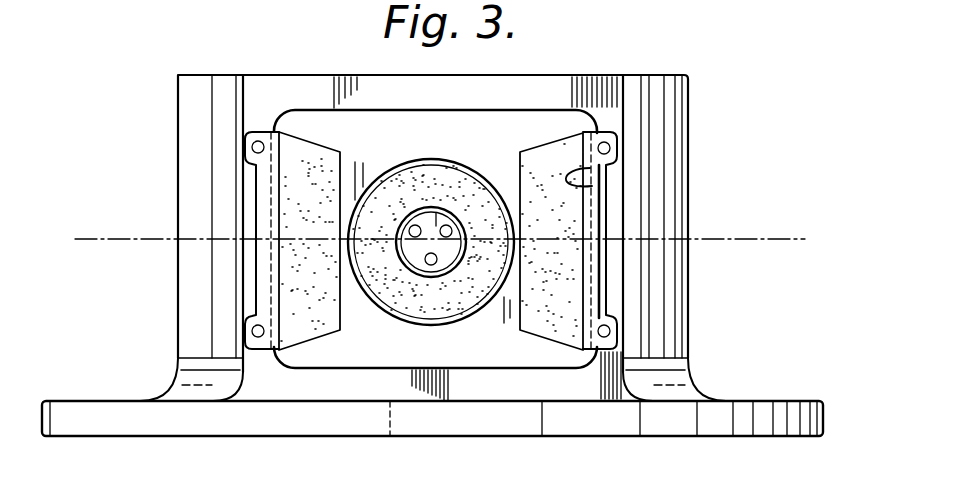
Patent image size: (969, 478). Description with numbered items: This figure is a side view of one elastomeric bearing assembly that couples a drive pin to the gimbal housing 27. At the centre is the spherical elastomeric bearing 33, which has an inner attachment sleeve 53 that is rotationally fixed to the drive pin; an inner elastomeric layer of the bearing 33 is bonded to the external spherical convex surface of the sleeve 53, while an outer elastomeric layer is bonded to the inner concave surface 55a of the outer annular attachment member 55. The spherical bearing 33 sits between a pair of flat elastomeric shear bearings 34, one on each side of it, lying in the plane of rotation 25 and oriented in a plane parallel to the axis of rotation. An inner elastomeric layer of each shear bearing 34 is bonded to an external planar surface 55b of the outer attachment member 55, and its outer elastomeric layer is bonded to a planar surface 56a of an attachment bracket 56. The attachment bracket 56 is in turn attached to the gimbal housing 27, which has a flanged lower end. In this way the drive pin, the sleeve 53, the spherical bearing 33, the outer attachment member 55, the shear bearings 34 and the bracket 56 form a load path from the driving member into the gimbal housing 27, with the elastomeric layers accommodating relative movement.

The plane of rotation 25 is at (145, 236).
The gimbal housing 27 is at (205, 92).
The spherical elastomeric bearing 33 is at (476, 196).
The flat elastomeric shear bearings 34 is at (295, 280).
The inner attachment sleeve 53 is at (417, 208).
The outer annular attachment member 55 is at (512, 318).
The inner concave surface 55a is at (408, 322).
The external planar surface 55b is at (348, 307).
The attachment bracket 56 is at (600, 188).
The planar surface 56a is at (580, 170).